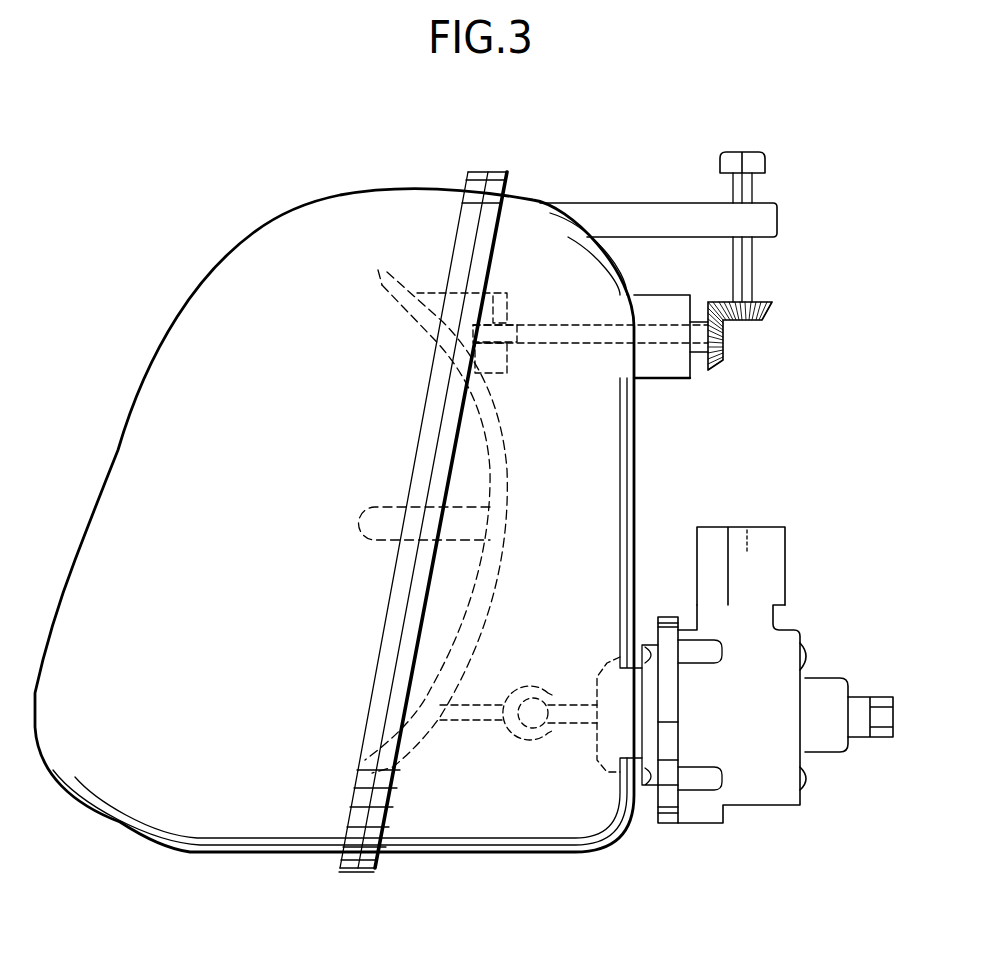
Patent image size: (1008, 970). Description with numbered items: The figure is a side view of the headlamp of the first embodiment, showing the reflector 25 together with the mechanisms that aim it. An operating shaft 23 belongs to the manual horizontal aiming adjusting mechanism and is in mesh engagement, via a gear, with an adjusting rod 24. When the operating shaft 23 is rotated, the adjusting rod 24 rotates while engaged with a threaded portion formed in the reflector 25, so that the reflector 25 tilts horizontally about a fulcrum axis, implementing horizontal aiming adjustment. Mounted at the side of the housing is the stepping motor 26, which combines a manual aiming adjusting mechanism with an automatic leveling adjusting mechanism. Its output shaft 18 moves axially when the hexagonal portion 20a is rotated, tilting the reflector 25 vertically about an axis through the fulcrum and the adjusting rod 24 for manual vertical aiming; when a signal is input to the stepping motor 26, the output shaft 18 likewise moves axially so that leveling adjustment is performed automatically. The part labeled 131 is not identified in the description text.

The output shaft 18 is at (567, 727).
The hexagonal portion 20a is at (880, 738).
The operating shaft 23 is at (755, 187).
The adjusting rod 24 is at (580, 347).
The reflector 25 is at (385, 272).
The stepping motor 26 is at (800, 633).
The fixing nut 131 is at (495, 290).